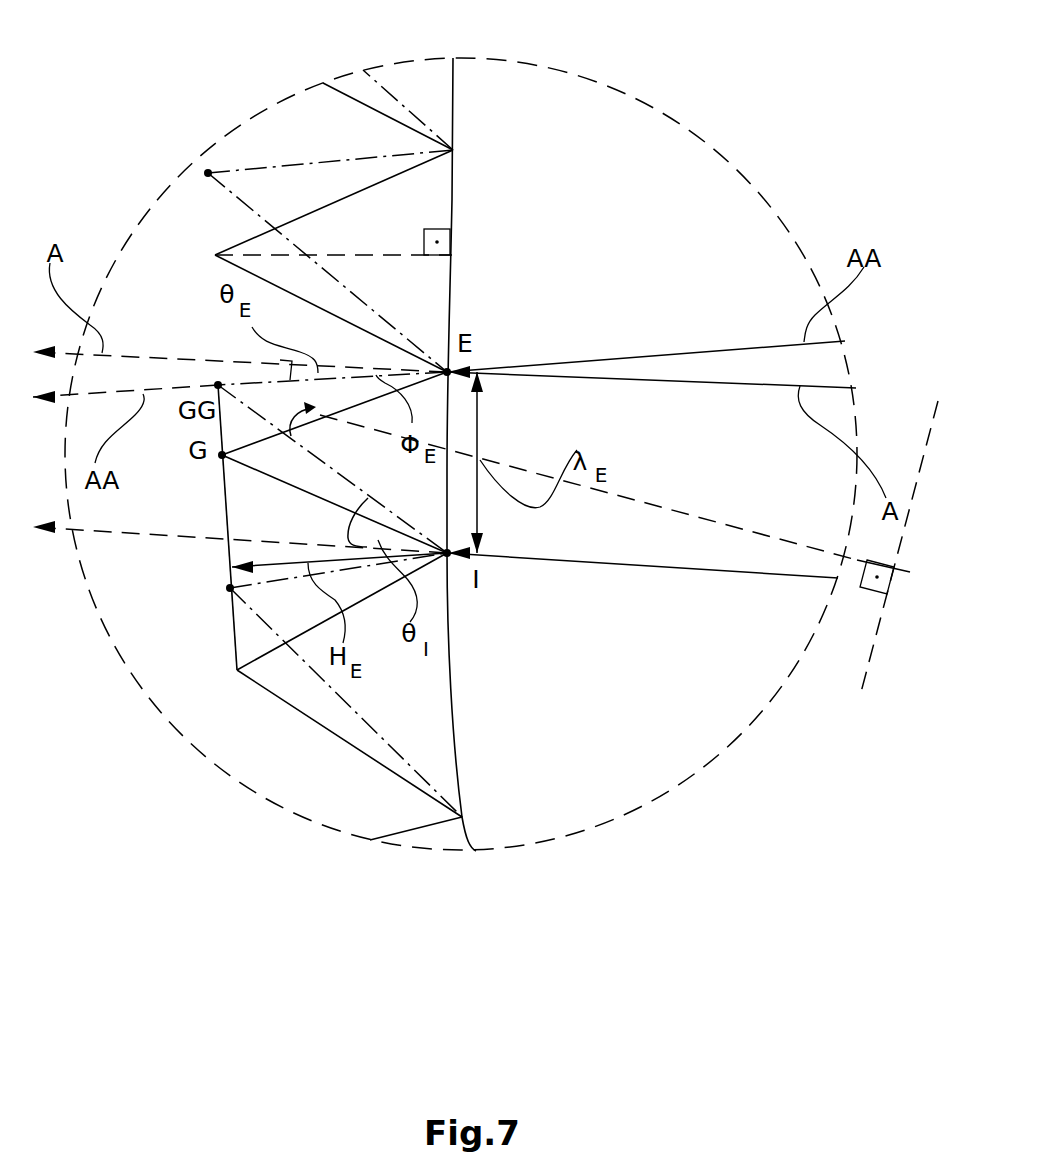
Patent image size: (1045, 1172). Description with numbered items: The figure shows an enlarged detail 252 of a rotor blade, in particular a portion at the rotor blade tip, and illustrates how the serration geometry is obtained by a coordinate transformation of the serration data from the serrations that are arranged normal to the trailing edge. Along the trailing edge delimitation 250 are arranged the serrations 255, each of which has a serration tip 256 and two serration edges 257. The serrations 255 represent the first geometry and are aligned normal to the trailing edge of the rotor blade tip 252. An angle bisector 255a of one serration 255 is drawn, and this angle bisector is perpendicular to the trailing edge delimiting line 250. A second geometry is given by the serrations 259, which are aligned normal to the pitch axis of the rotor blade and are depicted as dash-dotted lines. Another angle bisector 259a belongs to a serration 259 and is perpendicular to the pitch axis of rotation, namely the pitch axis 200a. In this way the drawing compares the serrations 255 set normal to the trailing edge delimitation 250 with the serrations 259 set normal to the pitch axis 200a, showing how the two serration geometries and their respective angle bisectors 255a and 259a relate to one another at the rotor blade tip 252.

The trailing edge delimitation 250 is at (460, 193).
The rotor blade tip 252 is at (687, 717).
The serration 255 is at (390, 745).
The angle bisector 255a is at (353, 255).
The serration tip 256 is at (215, 255).
The serration edge 257 is at (293, 413).
The serration 259 is at (283, 185).
The angle bisector 259a is at (680, 511).
The pitch axis 200a is at (924, 439).